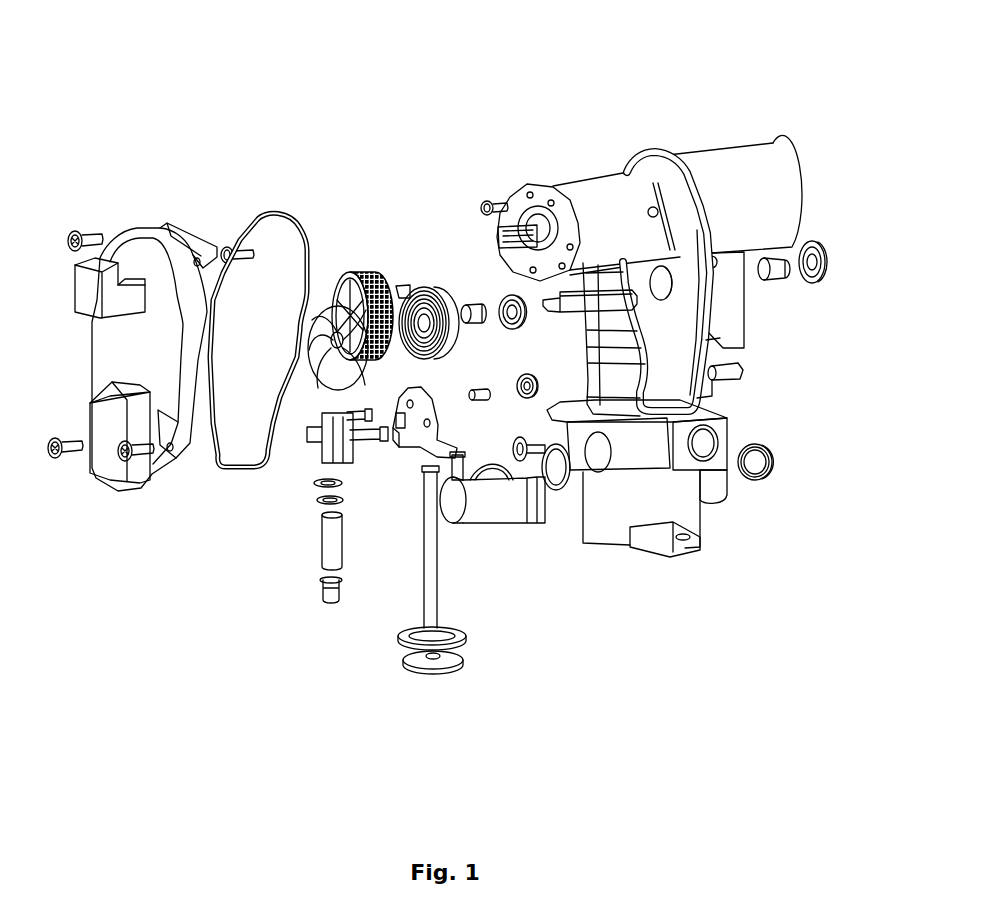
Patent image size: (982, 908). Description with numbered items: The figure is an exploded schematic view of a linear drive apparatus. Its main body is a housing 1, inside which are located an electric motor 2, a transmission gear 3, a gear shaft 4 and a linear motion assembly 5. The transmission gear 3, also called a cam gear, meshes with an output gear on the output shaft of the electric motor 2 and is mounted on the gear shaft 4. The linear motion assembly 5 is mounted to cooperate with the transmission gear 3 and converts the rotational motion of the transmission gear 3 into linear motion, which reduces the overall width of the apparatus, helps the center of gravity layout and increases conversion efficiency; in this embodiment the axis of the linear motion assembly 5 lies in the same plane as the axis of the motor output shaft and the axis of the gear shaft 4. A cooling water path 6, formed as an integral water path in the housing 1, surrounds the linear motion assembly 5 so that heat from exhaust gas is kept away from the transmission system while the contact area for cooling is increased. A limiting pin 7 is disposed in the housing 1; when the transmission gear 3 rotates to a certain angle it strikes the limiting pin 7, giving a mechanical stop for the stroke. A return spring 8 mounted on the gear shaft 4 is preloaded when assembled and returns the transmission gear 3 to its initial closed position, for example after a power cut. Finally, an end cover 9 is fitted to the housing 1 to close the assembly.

The housing 1 is at (732, 187).
The electric motor 2 is at (587, 197).
The transmission gear 3 is at (353, 268).
The gear shaft 4 is at (617, 293).
The linear motion assembly 5 is at (410, 663).
The cooling water path 6 is at (600, 447).
The limiting pin 7 is at (730, 377).
The return spring 8 is at (428, 287).
The end cover 9 is at (133, 255).